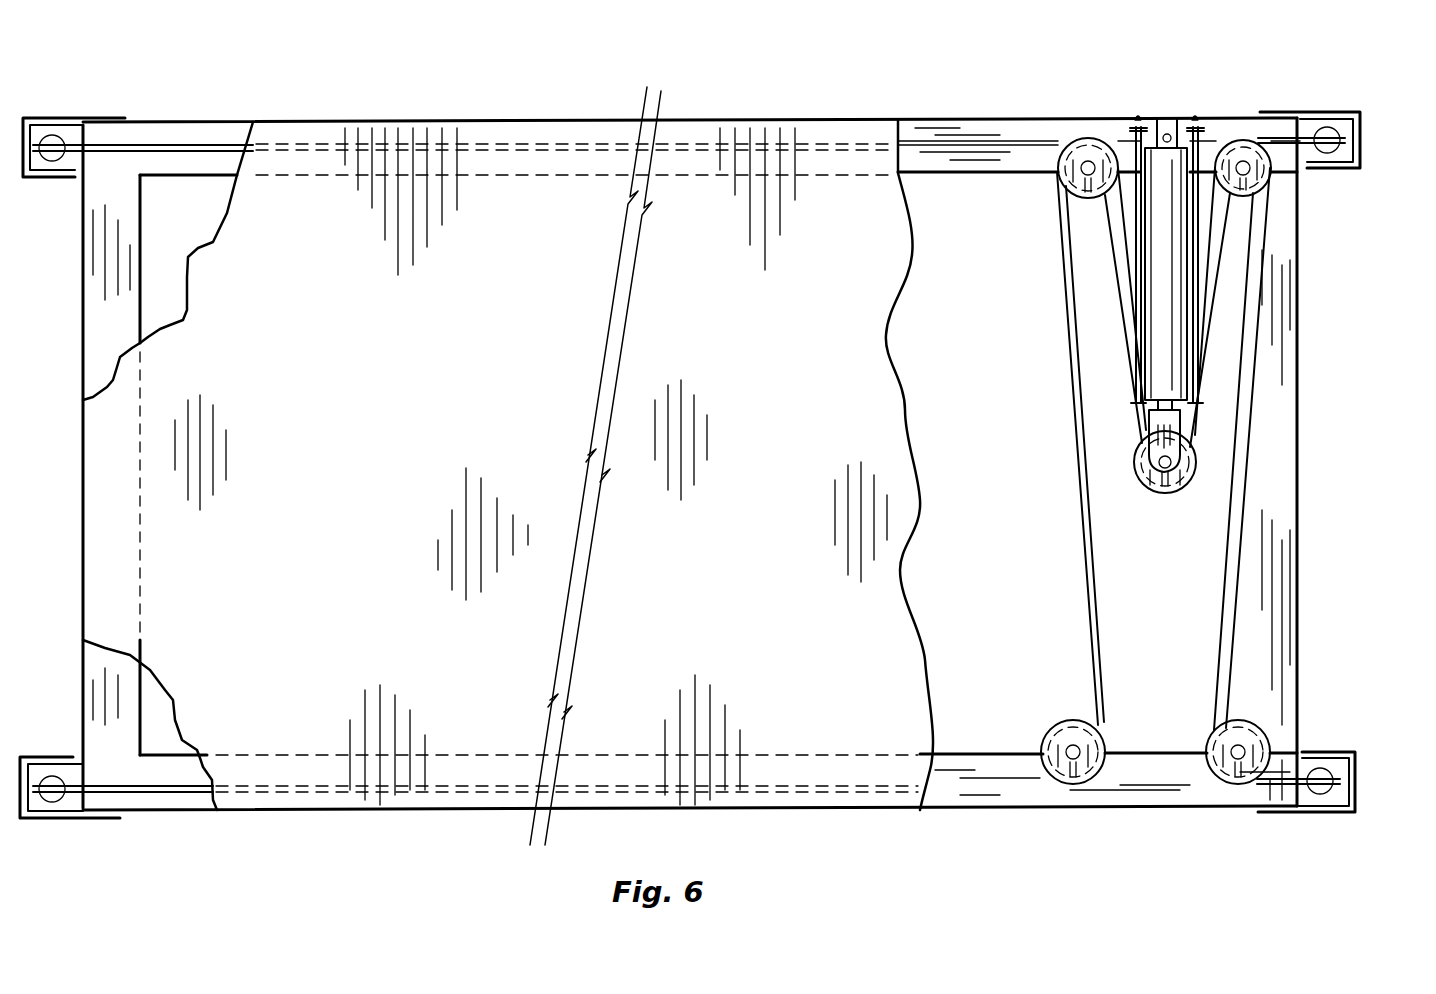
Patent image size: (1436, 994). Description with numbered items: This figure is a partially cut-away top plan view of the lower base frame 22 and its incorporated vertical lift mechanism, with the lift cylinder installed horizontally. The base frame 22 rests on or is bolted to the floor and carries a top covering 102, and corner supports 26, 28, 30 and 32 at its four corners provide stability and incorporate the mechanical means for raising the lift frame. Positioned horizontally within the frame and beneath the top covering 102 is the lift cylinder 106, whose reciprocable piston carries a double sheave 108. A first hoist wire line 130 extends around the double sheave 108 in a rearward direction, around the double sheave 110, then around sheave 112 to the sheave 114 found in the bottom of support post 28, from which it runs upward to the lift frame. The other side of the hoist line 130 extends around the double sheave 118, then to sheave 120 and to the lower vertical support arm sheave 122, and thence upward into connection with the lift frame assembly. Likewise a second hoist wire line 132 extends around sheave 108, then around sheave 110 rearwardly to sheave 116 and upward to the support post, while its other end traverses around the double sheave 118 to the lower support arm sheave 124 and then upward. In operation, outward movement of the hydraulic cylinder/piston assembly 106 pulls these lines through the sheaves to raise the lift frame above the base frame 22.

The lower base frame 22 is at (708, 122).
The corner support 26 is at (1322, 812).
The corner support 28 is at (52, 818).
The corner support 30 is at (50, 118).
The corner support 32 is at (1322, 112).
The top covering 102 is at (369, 405).
The lift cylinder 106 is at (1160, 160).
The double sheave 108 is at (1170, 492).
The double sheave 110 is at (1088, 140).
The sheave 112 is at (1070, 788).
The sheave 114 is at (62, 795).
The sheave 116 is at (68, 150).
The double sheave 118 is at (1240, 160).
The sheave 120 is at (1222, 785).
The lower vertical support arm sheave 122 is at (1340, 776).
The lower support arm sheave 124 is at (1348, 142).
The first hoist wire line 130 is at (1065, 375).
The second hoist wire line 132 is at (1000, 140).